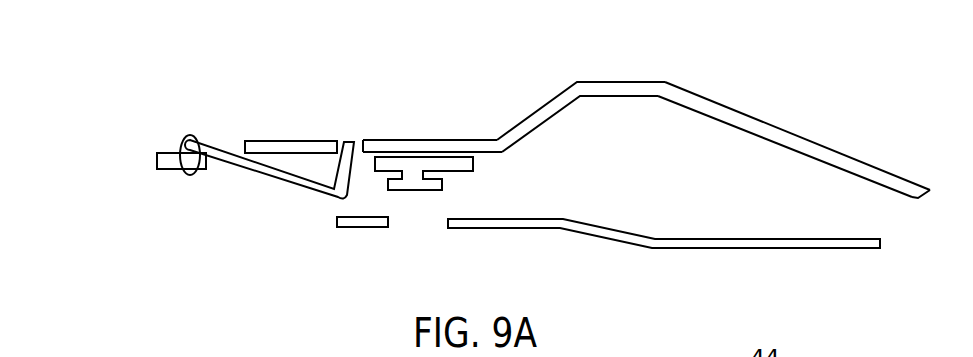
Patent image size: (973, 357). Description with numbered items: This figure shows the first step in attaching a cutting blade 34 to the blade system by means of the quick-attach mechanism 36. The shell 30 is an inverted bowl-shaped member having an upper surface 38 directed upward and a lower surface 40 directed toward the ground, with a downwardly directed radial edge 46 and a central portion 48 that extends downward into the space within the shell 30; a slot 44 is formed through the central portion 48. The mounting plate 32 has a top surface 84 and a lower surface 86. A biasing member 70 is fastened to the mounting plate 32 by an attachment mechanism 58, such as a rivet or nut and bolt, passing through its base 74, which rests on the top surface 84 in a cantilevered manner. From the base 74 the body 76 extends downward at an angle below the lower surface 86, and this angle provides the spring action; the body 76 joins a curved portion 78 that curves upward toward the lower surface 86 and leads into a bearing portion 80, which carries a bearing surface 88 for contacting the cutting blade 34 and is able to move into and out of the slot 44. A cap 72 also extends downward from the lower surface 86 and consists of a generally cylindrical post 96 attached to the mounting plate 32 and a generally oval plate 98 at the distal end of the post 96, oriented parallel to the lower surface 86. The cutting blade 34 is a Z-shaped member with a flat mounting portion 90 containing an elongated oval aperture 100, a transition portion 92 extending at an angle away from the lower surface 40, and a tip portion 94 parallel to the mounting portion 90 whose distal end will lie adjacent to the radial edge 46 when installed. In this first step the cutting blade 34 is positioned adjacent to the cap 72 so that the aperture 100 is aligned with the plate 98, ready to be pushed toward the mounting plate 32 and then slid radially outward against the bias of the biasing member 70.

The shell 30 is at (690, 88).
The mounting plate 32 is at (161, 178).
The cutting blade 34 is at (531, 230).
The quick-attach mechanism 36 is at (379, 195).
The upper surface 38 is at (775, 128).
The lower surface 40 is at (768, 140).
The slot 44 is at (362, 138).
The radial edge 46 is at (920, 199).
The central portion 48 is at (548, 120).
The attachment mechanism 58 is at (189, 136).
The biasing member 70 is at (220, 145).
The cap 72 is at (440, 194).
The base 74 is at (206, 142).
The body 76 is at (255, 166).
The curved portion 78 is at (337, 198).
The bearing portion 80 is at (346, 142).
The top surface 84 is at (164, 152).
The lower surface 86 is at (175, 171).
The bearing surface 88 is at (353, 186).
The mounting portion 90 is at (502, 219).
The transition portion 92 is at (610, 219).
The tip portion 94 is at (720, 238).
The post 96 is at (415, 177).
The plate 98 is at (398, 180).
The aperture 100 is at (439, 225).